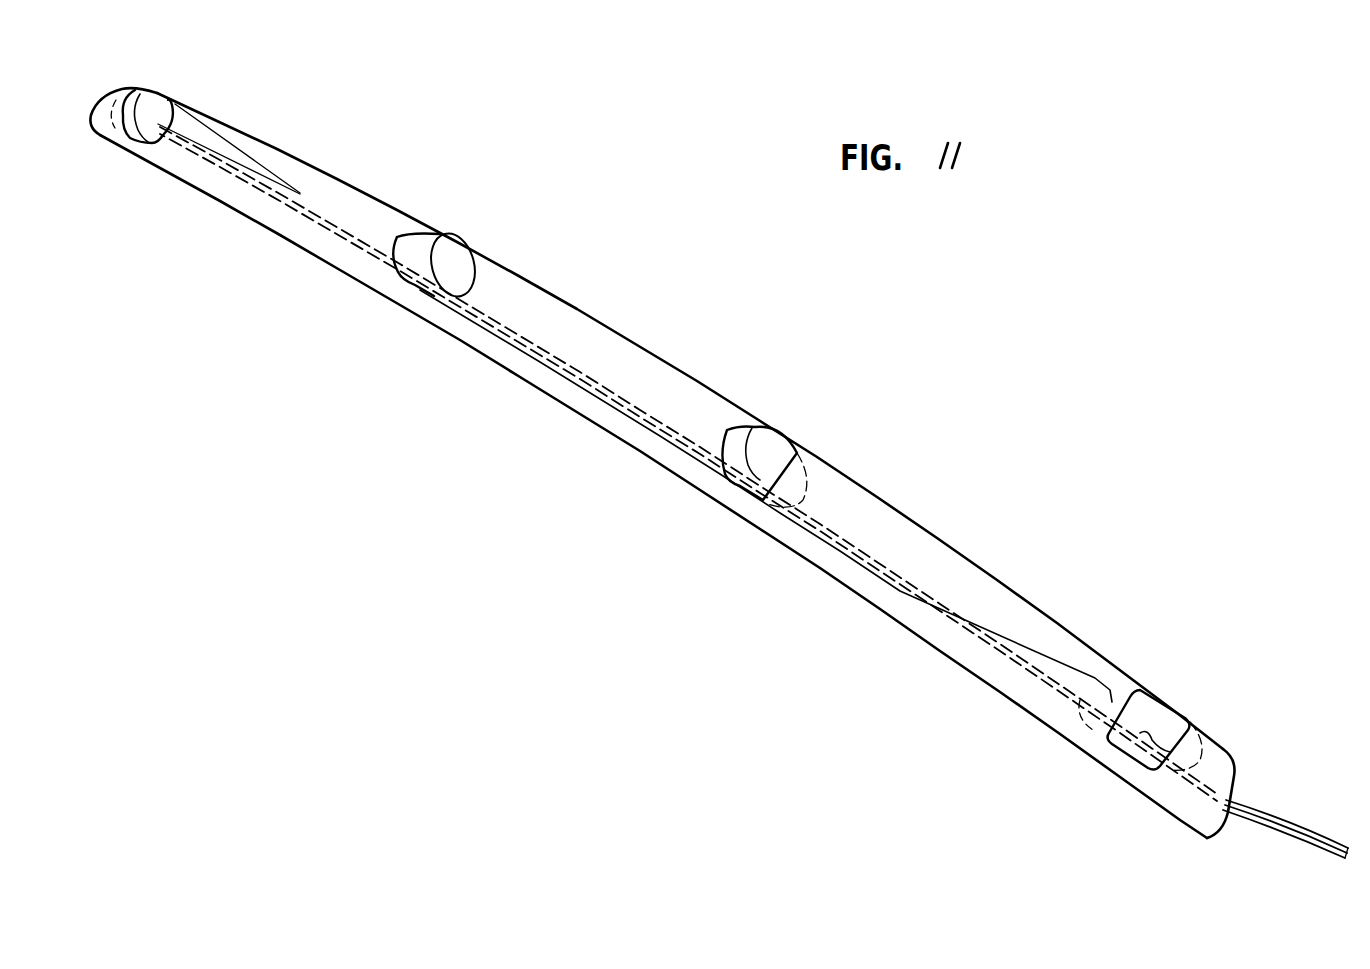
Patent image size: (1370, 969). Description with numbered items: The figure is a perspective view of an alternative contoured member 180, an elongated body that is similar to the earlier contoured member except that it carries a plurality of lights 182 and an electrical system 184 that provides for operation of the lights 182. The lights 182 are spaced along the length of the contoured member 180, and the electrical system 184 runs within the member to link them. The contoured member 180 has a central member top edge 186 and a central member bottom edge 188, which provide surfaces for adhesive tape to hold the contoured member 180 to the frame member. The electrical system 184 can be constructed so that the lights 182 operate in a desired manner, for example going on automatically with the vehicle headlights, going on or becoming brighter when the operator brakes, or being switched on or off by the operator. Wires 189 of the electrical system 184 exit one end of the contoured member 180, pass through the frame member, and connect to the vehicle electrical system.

The contoured member 180 is at (722, 323).
The lights 182 is at (184, 80).
The electrical system 184 is at (943, 612).
The central member top edge 186 is at (910, 473).
The central member bottom edge 188 is at (803, 557).
The wires 189 is at (1243, 820).